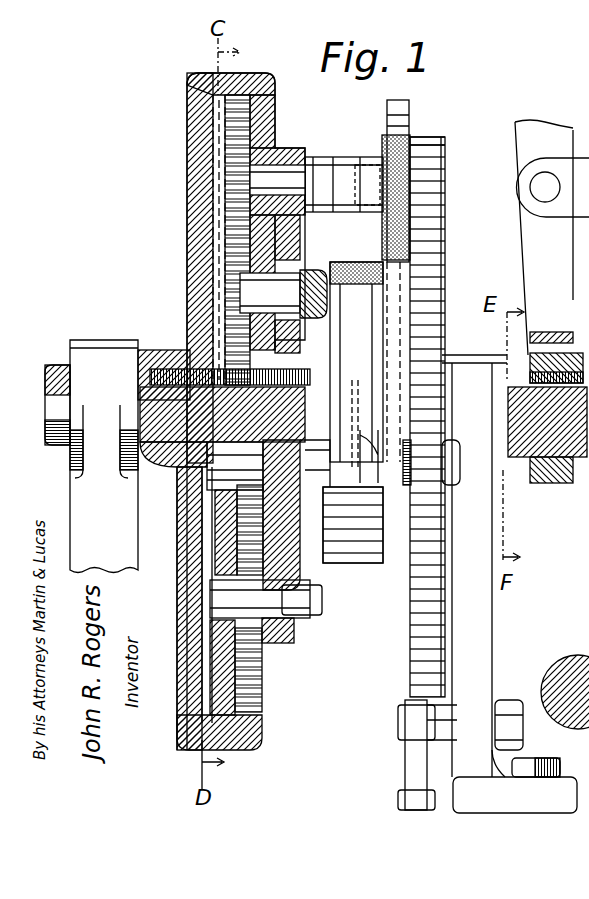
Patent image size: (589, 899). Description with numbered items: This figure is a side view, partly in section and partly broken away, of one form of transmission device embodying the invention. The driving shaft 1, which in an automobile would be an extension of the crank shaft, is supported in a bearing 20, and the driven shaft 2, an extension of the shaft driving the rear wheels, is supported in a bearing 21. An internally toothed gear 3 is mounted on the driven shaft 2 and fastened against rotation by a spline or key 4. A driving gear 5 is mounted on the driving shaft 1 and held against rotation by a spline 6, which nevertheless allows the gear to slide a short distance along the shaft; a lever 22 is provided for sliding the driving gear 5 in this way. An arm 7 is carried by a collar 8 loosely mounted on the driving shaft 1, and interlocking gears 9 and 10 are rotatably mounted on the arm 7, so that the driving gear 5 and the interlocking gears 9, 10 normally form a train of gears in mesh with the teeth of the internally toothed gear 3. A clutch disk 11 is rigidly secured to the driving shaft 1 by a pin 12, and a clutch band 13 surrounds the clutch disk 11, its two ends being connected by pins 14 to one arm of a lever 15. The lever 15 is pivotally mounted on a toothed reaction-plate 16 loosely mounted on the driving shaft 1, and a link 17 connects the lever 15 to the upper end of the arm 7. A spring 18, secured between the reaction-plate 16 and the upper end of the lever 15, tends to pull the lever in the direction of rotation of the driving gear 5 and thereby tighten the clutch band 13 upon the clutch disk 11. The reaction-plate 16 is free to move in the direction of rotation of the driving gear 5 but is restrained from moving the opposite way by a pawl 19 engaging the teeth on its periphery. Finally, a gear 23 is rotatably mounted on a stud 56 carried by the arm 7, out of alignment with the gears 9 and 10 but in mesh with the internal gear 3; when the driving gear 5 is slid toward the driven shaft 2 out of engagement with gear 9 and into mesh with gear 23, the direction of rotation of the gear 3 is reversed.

The driving shaft 1 is at (522, 462).
The driven shaft 2 is at (63, 370).
The internally toothed gear 3 is at (215, 143).
The spline or key 4 is at (183, 352).
The driving gear 5 is at (245, 458).
The spline 6 is at (262, 380).
The arm 7 is at (298, 246).
The collar 8 is at (313, 468).
The interlocking gear 9 is at (245, 268).
The interlocking gear 10 is at (222, 228).
The clutch disk 11 is at (335, 560).
The pin 12 is at (356, 405).
The clutch band 13 is at (335, 612).
The pins 14 is at (313, 490).
The lever 15 is at (395, 103).
The reaction-plate 16 is at (430, 213).
The link 17 is at (323, 158).
The spring 18 is at (418, 138).
The pawl 19 is at (405, 700).
The bearing 20 is at (509, 584).
The bearing 21 is at (104, 456).
The lever 22 is at (552, 237).
The gear 23 is at (255, 665).
The stud 56 is at (180, 635).